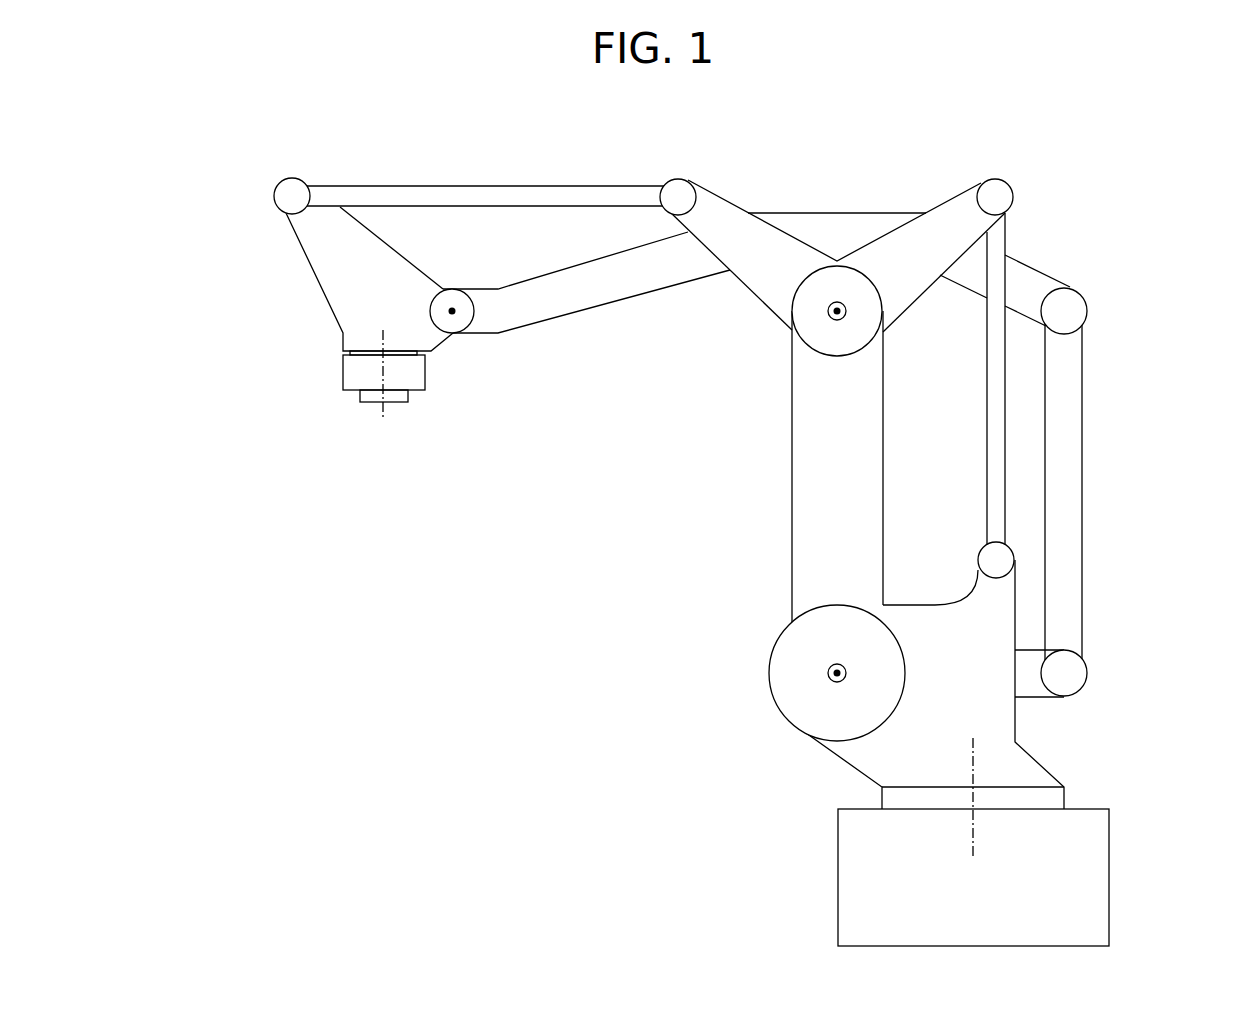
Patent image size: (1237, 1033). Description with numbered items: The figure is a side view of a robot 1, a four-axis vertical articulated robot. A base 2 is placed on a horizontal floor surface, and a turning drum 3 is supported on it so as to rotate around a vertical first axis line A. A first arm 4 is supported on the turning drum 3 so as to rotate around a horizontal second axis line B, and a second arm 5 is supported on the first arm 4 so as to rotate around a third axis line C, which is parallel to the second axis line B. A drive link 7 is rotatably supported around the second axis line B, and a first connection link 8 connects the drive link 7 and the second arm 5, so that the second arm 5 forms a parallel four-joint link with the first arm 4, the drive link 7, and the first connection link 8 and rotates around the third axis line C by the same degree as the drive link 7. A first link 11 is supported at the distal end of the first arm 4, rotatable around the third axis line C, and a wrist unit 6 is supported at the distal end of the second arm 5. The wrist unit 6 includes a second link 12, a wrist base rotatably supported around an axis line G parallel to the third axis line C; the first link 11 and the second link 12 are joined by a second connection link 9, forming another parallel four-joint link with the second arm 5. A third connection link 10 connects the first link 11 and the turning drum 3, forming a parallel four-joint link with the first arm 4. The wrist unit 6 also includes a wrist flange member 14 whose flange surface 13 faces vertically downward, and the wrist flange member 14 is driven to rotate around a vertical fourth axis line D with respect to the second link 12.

The robot 1 is at (1084, 150).
The base 2 is at (1110, 867).
The turning drum 3 is at (1015, 727).
The first arm 4 is at (792, 472).
The second arm 5 is at (638, 302).
The wrist unit 6 is at (308, 355).
The drive link 7 is at (1045, 702).
The first connection link 8 is at (1080, 440).
The second connection link 9 is at (500, 186).
The third connection link 10 is at (985, 363).
The first link 11 is at (728, 187).
The second link (wrist base) 12 is at (315, 282).
The flange surface 13 is at (397, 403).
The wrist flange member 14 is at (368, 416).
The first axis line A is at (973, 816).
The second axis line B is at (828, 673).
The third axis line C is at (837, 302).
The fourth axis line D is at (382, 357).
The axis line G is at (452, 314).